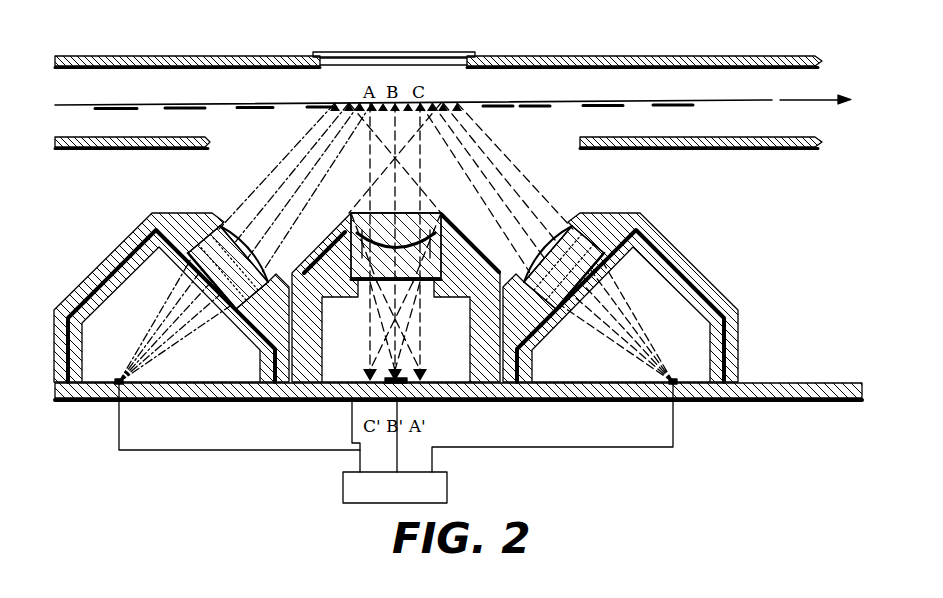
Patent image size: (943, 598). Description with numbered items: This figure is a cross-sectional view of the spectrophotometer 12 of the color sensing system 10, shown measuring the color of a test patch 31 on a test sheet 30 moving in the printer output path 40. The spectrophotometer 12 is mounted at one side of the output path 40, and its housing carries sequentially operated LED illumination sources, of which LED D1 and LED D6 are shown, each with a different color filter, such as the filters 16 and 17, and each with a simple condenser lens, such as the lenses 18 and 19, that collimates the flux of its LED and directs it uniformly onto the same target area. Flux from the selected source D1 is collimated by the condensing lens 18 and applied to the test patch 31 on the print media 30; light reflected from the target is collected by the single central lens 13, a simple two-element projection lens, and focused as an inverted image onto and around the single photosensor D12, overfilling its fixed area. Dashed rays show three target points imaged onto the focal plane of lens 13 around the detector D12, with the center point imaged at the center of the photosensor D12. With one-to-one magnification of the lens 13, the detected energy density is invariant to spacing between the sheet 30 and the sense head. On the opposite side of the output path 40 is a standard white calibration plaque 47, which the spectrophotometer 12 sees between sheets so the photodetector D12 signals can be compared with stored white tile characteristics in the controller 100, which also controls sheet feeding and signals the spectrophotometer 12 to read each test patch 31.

The color sensing system 10 is at (546, 45).
The spectrophotometer 12 is at (716, 274).
The central lens 13 is at (441, 214).
The color filter 16 is at (570, 313).
The color filter 17 is at (222, 313).
The condenser lens 18 is at (560, 236).
The condenser lens 19 is at (232, 236).
The test sheet 30 is at (703, 101).
The test patch 31 is at (270, 107).
The output path 40 is at (826, 101).
The calibration plaque 47 is at (437, 52).
The controller 100 is at (447, 489).
The LED D1 is at (674, 380).
The LED D6 is at (118, 380).
The photosensor D12 is at (436, 401).